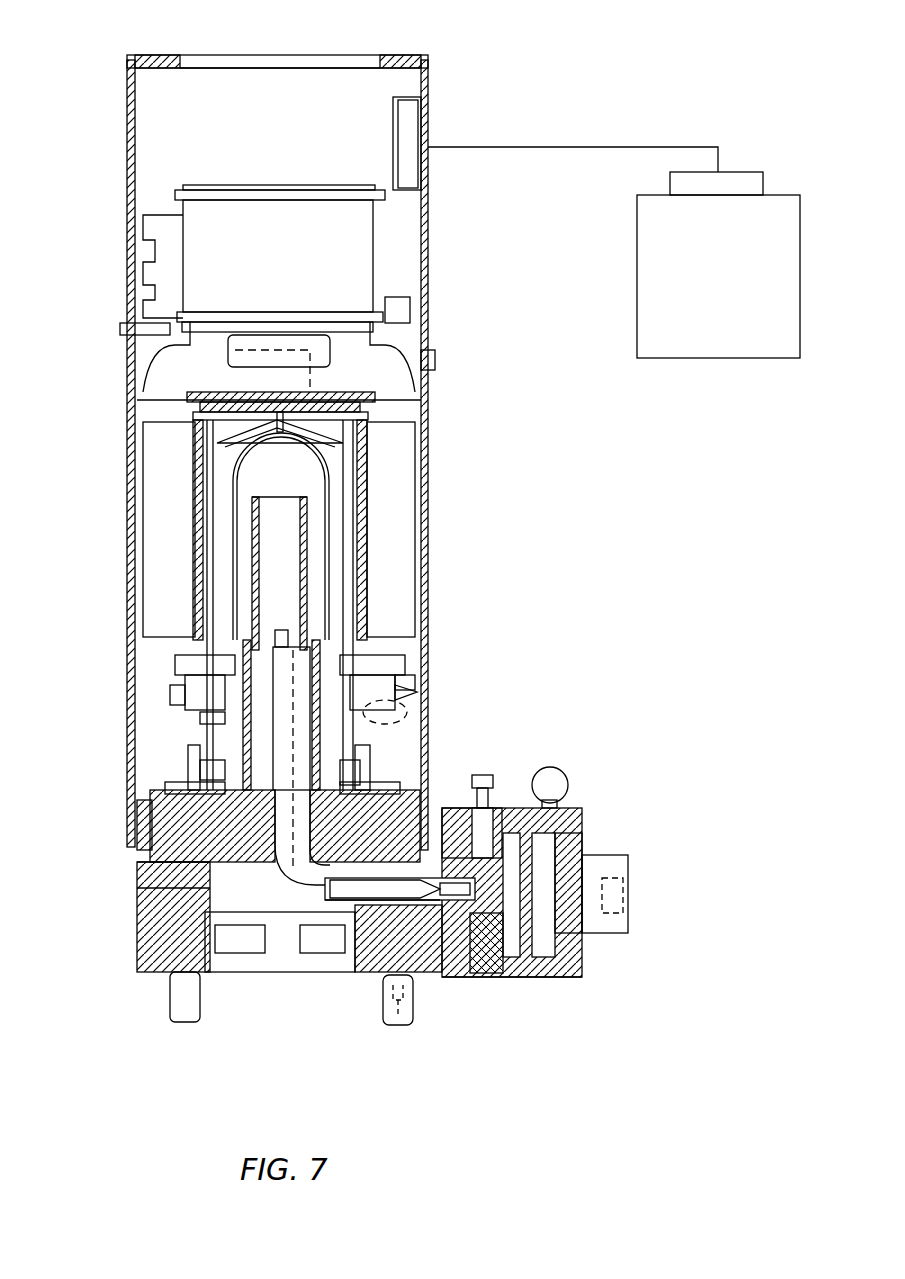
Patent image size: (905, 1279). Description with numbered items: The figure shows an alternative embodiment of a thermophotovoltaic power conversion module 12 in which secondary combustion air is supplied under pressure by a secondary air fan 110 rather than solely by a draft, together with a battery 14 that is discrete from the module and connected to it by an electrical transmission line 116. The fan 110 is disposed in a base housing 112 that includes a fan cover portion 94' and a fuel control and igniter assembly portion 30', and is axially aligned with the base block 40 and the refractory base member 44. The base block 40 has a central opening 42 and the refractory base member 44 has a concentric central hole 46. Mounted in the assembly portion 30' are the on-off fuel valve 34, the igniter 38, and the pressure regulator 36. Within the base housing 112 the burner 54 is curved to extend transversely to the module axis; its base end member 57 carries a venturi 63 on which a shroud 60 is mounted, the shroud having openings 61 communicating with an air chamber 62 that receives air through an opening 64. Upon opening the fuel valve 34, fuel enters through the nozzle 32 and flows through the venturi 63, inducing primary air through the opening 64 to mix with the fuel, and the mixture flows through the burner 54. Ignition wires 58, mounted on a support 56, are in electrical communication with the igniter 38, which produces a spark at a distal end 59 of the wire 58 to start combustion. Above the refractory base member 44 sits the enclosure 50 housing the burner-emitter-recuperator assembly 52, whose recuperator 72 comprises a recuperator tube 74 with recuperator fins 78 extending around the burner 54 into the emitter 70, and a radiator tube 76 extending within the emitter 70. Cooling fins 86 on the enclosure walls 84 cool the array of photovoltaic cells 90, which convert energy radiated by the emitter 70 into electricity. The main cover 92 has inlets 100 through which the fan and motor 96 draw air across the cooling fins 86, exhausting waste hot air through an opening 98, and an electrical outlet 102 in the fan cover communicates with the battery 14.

The thermophotovoltaic power conversion module 12 is at (528, 551).
The battery 14 is at (722, 294).
The fuel control and igniter assembly portion 30' is at (524, 886).
The nozzle 32 is at (625, 852).
The on-off fuel valve 34 is at (573, 780).
The pressure regulator 36 is at (540, 895).
The igniter 38 is at (445, 805).
The base block 40 is at (137, 850).
The central opening 42 is at (137, 870).
The refractory base member 44 is at (410, 790).
The central hole 46 is at (137, 888).
The enclosure 50 is at (195, 470).
The burner-emitter-recuperator assembly 52 is at (225, 655).
The burner 54 is at (225, 745).
The support 56 is at (305, 870).
The base end member 57 is at (392, 905).
The ignition wires 58 is at (385, 712).
The distal end 59 is at (295, 640).
The shroud 60 is at (445, 925).
The openings 61 is at (462, 925).
The air chamber 62 is at (500, 975).
The venturi 63 is at (440, 920).
The openings 64 is at (478, 830).
The emitter 70 is at (327, 532).
The recuperator 72 is at (320, 655).
The recuperator tube 74 is at (335, 722).
The radiator tube 76 is at (307, 560).
The recuperator fins 78 is at (225, 705).
The walls 84 is at (195, 510).
The cooling fins 86 is at (155, 433).
The array of photovoltaic cells 90 is at (365, 470).
The main cover 92 is at (435, 390).
The fan cover portion 94' is at (109, 942).
The fan and motor 96 is at (302, 254).
The opening 98 is at (185, 60).
The inlets 100 is at (430, 660).
The electrical outlet 102 is at (410, 118).
The secondary air fan 110 is at (305, 972).
The base housing 112 is at (545, 977).
The electrical transmission line 116 is at (575, 147).